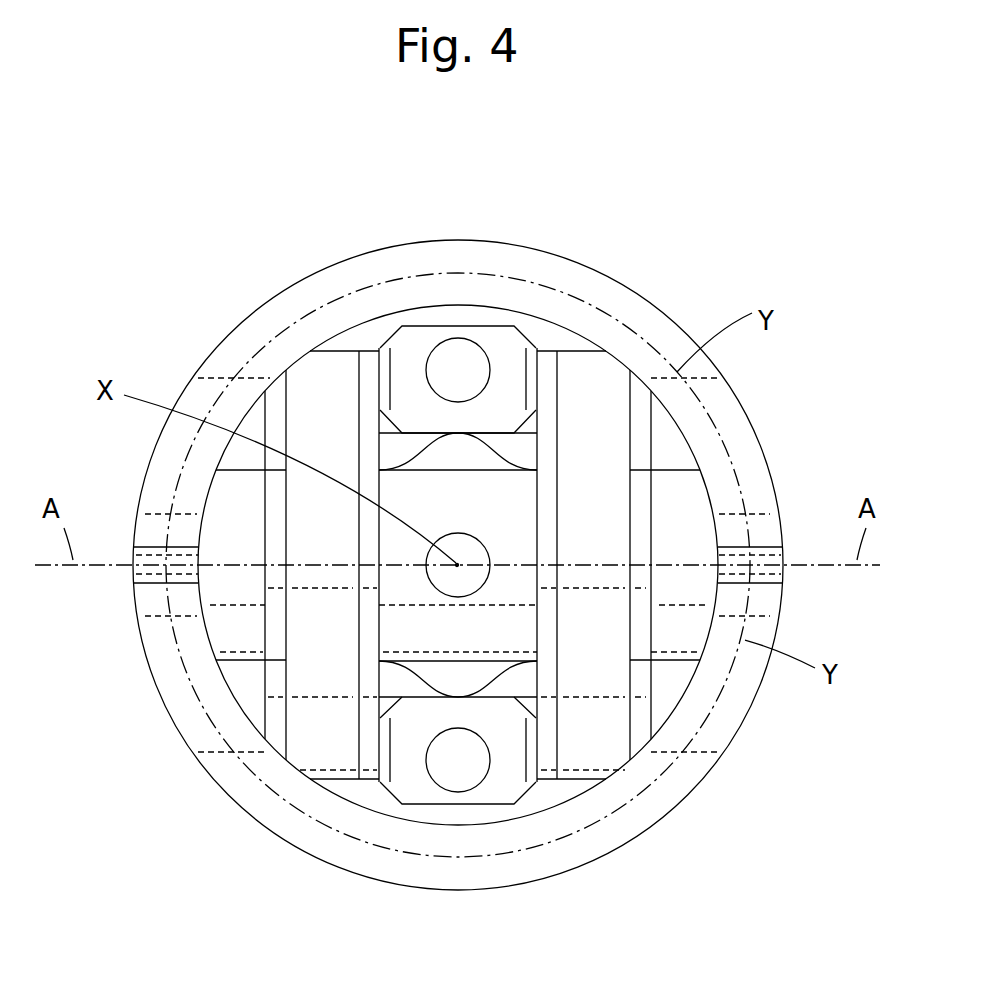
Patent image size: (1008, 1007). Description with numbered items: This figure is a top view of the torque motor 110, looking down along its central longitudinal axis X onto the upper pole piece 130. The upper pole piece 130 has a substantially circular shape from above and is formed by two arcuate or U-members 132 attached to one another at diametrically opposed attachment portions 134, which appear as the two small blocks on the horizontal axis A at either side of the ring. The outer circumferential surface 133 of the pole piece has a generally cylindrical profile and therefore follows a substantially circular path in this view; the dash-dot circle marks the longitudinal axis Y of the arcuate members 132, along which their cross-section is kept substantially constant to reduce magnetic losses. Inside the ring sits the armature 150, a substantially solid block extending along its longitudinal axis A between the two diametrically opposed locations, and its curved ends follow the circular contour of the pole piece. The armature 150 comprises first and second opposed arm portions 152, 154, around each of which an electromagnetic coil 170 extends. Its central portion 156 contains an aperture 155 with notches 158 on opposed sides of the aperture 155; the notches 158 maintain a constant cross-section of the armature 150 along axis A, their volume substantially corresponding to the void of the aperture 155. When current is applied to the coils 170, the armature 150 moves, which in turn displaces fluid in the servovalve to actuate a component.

The torque motor 110 is at (162, 230).
The upper pole piece 130 is at (660, 793).
The arcuate member 132 is at (397, 267).
The outer circumferential surface 133 is at (372, 880).
The attachment portion 134 is at (143, 574).
The armature 150 is at (466, 497).
The first arm portion 152 is at (235, 623).
The second arm portion 154 is at (677, 496).
The aperture 155 is at (433, 578).
The central portion 156 is at (458, 628).
The notch 158 is at (462, 445).
The electromagnetic coil 170 is at (608, 460).